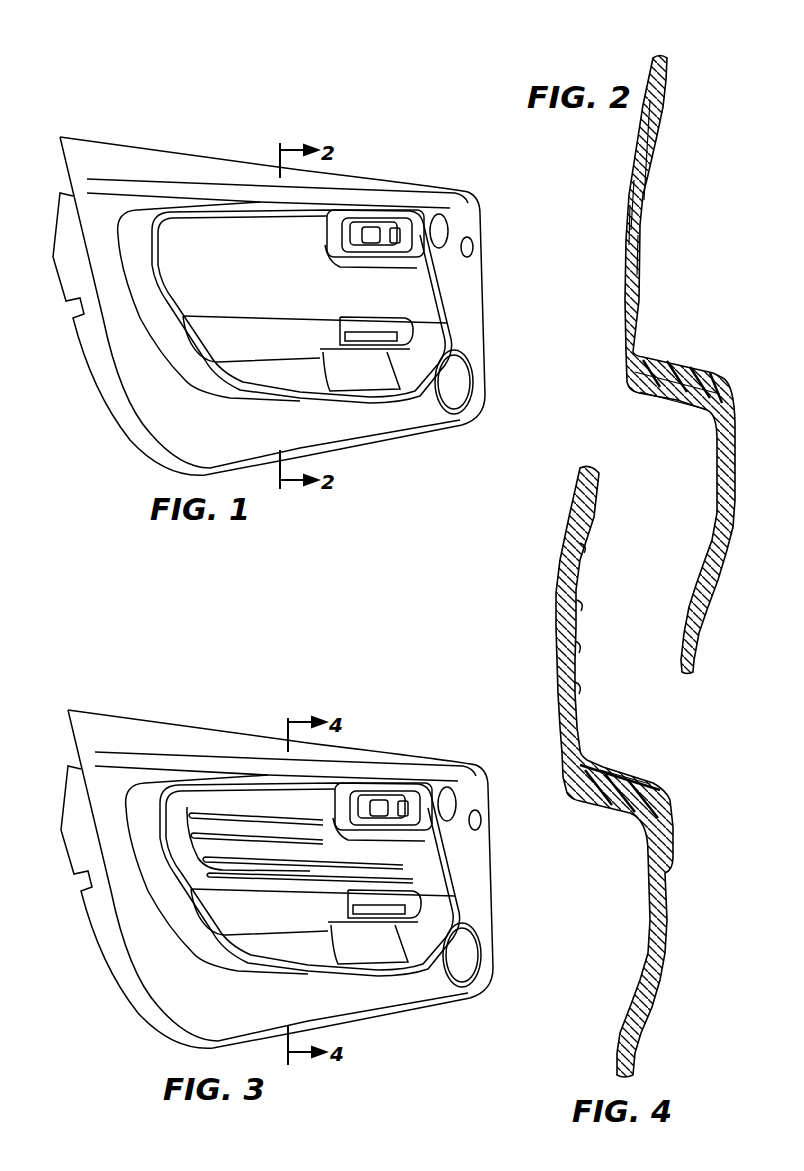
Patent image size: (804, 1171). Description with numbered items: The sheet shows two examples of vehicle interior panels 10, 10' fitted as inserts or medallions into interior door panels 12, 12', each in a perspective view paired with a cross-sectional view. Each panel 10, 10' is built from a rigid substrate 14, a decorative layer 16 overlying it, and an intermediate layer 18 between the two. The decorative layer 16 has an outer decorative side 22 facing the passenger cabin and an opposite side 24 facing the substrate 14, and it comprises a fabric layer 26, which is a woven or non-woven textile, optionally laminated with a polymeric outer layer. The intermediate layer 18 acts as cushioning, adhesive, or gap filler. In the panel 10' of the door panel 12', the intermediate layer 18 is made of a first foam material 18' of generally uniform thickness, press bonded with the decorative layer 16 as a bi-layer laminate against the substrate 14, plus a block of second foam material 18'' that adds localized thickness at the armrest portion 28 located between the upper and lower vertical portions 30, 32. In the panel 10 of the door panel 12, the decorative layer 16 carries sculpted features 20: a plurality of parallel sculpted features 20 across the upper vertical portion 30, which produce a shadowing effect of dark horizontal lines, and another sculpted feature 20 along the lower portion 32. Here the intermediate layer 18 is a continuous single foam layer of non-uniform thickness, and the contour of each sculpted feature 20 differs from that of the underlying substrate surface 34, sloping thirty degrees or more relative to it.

In FIG. 3, the vehicle interior panel 10 is at (310, 831).
In FIG. 1, the vehicle interior panel 10' is at (300, 257).
In FIG. 3, the interior door panel 12 is at (277, 873).
In FIG. 1, the interior door panel 12' is at (269, 303).
In FIG. 2, the rigid substrate 14 is at (634, 146).
In FIG. 4, the rigid substrate 14 is at (574, 524).
In FIG. 2, the decorative layer 16 is at (645, 196).
In FIG. 4, the decorative layer 16 is at (579, 617).
In FIG. 2, the intermediate layer 18 is at (673, 150).
In FIG. 4, the intermediate layer 18 is at (607, 551).
In FIG. 2, the first foam material 18' is at (694, 372).
In FIG. 2, the second foam material 18'' is at (672, 420).
In FIG. 3, the sculpted features 20 is at (254, 824).
In FIG. 4, the sculpted features 20 is at (576, 688).
In FIG. 1, the outer decorative side 22 is at (410, 287).
In FIG. 3, the outer decorative side 22 is at (426, 891).
In FIG. 2, the opposite side 24 is at (634, 221).
In FIG. 2, the fabric layer 26 is at (645, 252).
In FIG. 4, the fabric layer 26 is at (638, 777).
In FIG. 1, the armrest portion 28 is at (210, 324).
In FIG. 2, the armrest portion 28 is at (672, 366).
In FIG. 3, the armrest portion 28 is at (300, 915).
In FIG. 4, the armrest portion 28 is at (606, 772).
In FIG. 1, the upper vertical portion 30 is at (177, 240).
In FIG. 3, the upper vertical portion 30 is at (290, 840).
In FIG. 1, the lower vertical portion 32 is at (243, 370).
In FIG. 3, the lower vertical portion 32 is at (228, 948).
In FIG. 4, the substrate surface 34 is at (573, 651).